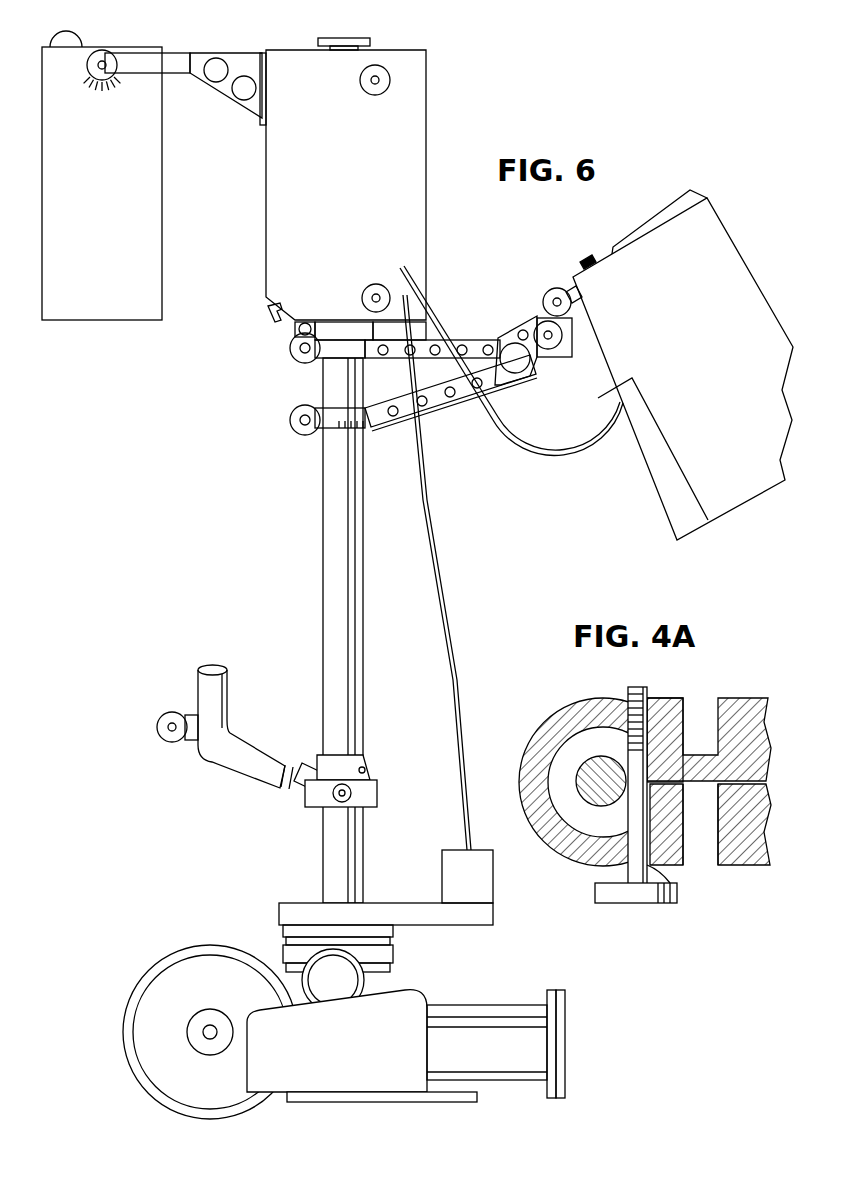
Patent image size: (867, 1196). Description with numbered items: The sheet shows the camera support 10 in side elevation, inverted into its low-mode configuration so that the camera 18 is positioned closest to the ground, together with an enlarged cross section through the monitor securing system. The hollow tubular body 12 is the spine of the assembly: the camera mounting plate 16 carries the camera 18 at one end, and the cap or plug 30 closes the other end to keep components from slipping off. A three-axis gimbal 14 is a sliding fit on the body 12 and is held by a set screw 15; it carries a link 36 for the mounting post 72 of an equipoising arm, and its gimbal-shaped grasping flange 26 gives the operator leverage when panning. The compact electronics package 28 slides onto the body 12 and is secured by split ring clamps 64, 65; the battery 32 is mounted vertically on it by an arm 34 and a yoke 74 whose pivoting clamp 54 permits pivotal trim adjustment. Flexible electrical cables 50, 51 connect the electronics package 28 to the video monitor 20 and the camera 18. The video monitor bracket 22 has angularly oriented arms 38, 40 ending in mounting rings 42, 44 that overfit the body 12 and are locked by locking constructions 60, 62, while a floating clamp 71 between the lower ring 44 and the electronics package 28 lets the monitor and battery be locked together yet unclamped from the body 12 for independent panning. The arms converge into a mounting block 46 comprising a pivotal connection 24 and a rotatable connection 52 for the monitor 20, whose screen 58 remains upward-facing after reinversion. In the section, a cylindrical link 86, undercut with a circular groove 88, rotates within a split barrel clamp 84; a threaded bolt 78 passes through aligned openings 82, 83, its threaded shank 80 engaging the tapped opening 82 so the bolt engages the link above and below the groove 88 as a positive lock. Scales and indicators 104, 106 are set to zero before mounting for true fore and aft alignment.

In FIG. 6, the camera support 10 is at (308, 554).
In FIG. 6, the tubular body 12 is at (340, 682).
In FIG. 6, the three-axis gimbal 14 is at (375, 800).
In FIG. 6, the set screw 15 is at (365, 775).
In FIG. 6, the camera mounting plate 16 is at (395, 900).
In FIG. 6, the camera 18 is at (395, 1085).
In FIG. 6, the video monitor 20 is at (725, 285).
In FIG. 6, the video monitor bracket 22 is at (493, 427).
In FIG. 6, the pivotal connection 24 is at (553, 290).
In FIG. 6, the grasping flange 26 is at (310, 785).
In FIG. 6, the electronics package 28 is at (407, 172).
In FIG. 6, the cap or plug 30 is at (340, 40).
In FIG. 6, the battery 32 is at (150, 212).
In FIG. 6, the arm 34 is at (228, 93).
In FIG. 6, the link 36 is at (240, 760).
In FIG. 6, the arm 38 is at (395, 430).
In FIG. 6, the arm 40 is at (395, 360).
In FIG. 6, the mounting ring 42 is at (330, 418).
In FIG. 6, the mounting ring 44 is at (340, 353).
In FIG. 6, the mounting block 46 is at (498, 340).
In FIG. 4A, the mounting block 46 is at (770, 715).
In FIG. 6, the flexible electrical cable 50 is at (448, 605).
In FIG. 6, the flexible electrical cable 51 is at (547, 457).
In FIG. 6, the rotatable connection 52 is at (518, 368).
In FIG. 6, the pivoting clamp 54 is at (107, 50).
In FIG. 6, the monitor screen 58 is at (635, 222).
In FIG. 6, the locking construction 60 is at (300, 432).
In FIG. 6, the locking construction 62 is at (290, 350).
In FIG. 6, the split ring clamp 64 is at (376, 97).
In FIG. 6, the split ring clamp 65 is at (368, 290).
In FIG. 6, the floating clamp 71 is at (306, 336).
In FIG. 6, the mounting post 72 is at (198, 695).
In FIG. 6, the yoke 74 is at (172, 55).
In FIG. 6, the threaded bolt 78 is at (548, 350).
In FIG. 4A, the threaded bolt 78 is at (638, 903).
In FIG. 4A, the threaded shank 80 is at (640, 688).
In FIG. 4A, the opening 82 is at (665, 705).
In FIG. 4A, the opening 83 is at (650, 866).
In FIG. 4A, the split barrel clamp 84 is at (697, 800).
In FIG. 4A, the cylindrical link 86 is at (588, 733).
In FIG. 4A, the circular groove 88 is at (560, 795).
In FIG. 6, the scale and indicator 104 is at (108, 90).
In FIG. 6, the scale and indicator 106 is at (338, 435).